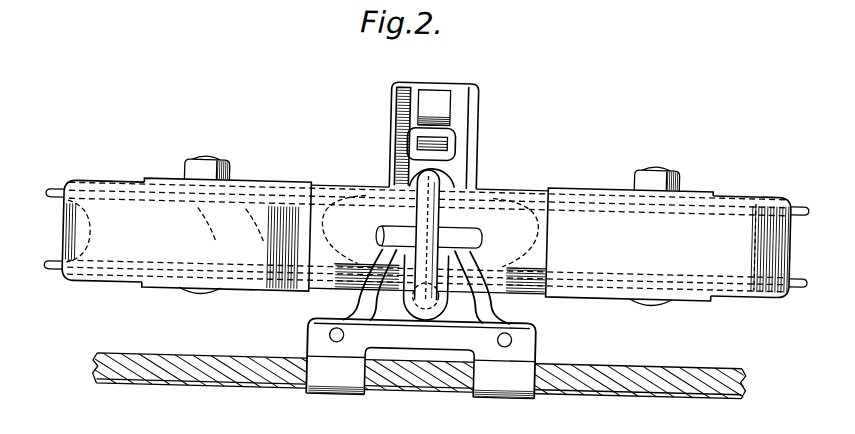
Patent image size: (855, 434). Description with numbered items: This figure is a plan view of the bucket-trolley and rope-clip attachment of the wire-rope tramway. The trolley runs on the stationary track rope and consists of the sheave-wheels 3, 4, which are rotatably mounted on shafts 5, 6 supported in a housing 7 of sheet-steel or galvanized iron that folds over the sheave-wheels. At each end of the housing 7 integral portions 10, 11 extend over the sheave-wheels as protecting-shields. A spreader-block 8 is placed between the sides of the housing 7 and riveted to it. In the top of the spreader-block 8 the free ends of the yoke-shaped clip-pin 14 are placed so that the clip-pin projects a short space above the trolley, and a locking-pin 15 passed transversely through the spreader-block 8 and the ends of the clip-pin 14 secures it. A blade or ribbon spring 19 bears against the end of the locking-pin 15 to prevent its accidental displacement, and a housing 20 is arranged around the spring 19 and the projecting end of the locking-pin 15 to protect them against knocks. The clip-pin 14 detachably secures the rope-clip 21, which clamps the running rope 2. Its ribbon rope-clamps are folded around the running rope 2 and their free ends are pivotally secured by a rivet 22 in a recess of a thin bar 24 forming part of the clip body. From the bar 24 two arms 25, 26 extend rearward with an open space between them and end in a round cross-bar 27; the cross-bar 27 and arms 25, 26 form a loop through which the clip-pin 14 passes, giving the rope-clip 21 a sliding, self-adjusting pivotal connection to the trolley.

The running rope 2 is at (227, 385).
The sheave-wheel 3 is at (56, 279).
The sheave-wheel 4 is at (798, 280).
The shaft 5 is at (203, 300).
The shaft 6 is at (658, 300).
The housing 7 is at (428, 228).
The spreader-block 8 is at (470, 206).
The integral portion 10 is at (72, 240).
The integral portion 11 is at (793, 250).
The clip-pin 14 is at (422, 208).
The locking-pin 15 is at (433, 160).
The spring 19 is at (438, 103).
The housing 20 is at (390, 139).
The rope-clip 21 is at (488, 304).
The rivet 22 is at (331, 337).
The bar 24 is at (421, 358).
The arm 25 is at (362, 302).
The arm 26 is at (478, 258).
The cross-bar 27 is at (447, 230).